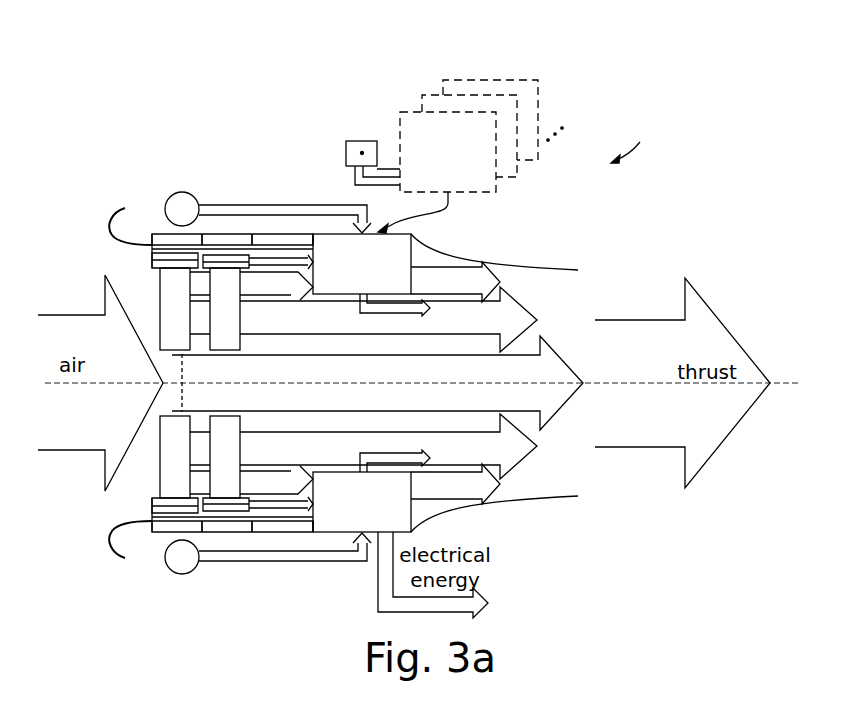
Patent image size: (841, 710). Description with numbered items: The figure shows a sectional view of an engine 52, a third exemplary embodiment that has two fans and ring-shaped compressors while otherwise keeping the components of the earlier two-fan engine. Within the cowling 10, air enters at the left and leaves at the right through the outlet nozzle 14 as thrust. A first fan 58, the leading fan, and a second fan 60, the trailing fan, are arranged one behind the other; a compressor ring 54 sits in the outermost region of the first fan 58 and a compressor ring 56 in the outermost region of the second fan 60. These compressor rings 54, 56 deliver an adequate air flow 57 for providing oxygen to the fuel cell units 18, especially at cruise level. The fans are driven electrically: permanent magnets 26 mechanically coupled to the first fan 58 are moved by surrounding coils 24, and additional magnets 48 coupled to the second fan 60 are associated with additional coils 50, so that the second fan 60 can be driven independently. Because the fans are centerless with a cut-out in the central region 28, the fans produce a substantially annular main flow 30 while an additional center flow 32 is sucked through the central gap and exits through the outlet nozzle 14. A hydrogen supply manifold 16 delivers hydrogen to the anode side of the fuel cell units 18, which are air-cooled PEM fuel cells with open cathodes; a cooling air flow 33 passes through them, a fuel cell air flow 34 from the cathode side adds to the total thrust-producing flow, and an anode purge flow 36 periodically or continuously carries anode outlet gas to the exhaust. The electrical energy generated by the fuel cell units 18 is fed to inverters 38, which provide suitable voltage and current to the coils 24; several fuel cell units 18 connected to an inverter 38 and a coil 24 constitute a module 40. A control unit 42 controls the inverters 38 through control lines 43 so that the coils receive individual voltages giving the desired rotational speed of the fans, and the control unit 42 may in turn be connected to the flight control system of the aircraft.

The cowling 10 is at (112, 566).
The outlet nozzle 14 is at (556, 266).
The hydrogen supply manifold 16 is at (183, 192).
The fuel cell units 18 is at (375, 276).
The coils 24 is at (200, 235).
The permanent magnets 26 is at (163, 246).
The central region 28 is at (183, 365).
The main flow 30 is at (512, 308).
The center flow 32 is at (575, 362).
The cooling air flow 33 is at (279, 292).
The fuel cell air flow 34 is at (487, 263).
The anode purge flow 36 is at (432, 310).
The inverters 38 is at (308, 235).
The module 40 is at (410, 116).
The control unit 42 is at (347, 141).
The control lines 43 is at (362, 150).
The additional magnets 48 is at (270, 257).
The additional coils 50 is at (244, 236).
The engine 52 is at (636, 140).
The compressor ring 54 is at (152, 250).
The compressor ring 56 is at (218, 254).
The air flow 57 is at (283, 248).
The first fan 58 is at (173, 305).
The second fan 60 is at (232, 312).